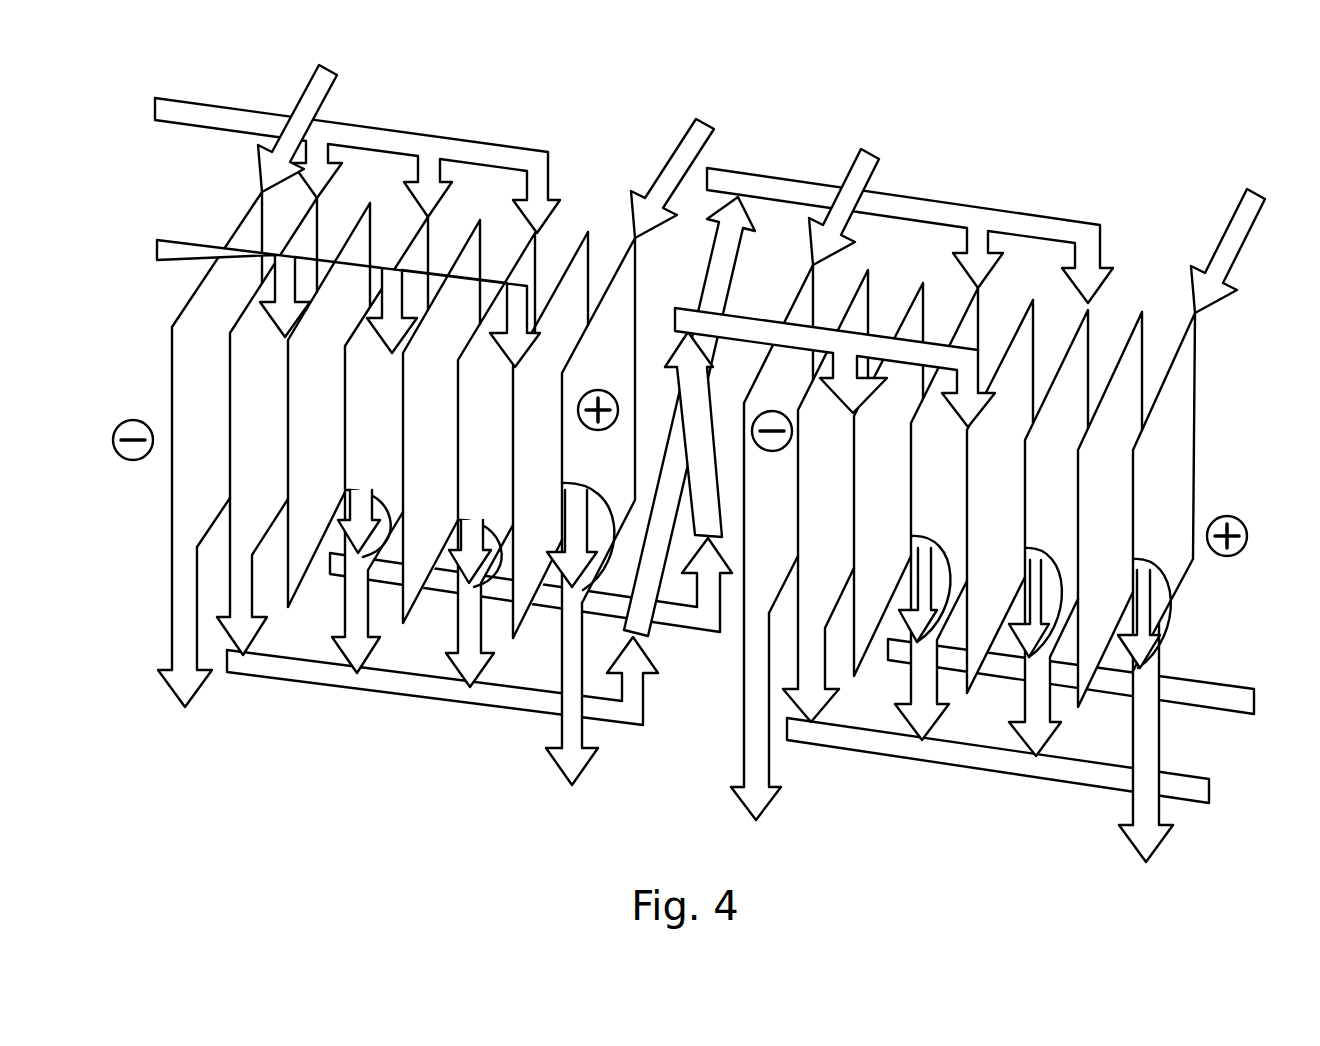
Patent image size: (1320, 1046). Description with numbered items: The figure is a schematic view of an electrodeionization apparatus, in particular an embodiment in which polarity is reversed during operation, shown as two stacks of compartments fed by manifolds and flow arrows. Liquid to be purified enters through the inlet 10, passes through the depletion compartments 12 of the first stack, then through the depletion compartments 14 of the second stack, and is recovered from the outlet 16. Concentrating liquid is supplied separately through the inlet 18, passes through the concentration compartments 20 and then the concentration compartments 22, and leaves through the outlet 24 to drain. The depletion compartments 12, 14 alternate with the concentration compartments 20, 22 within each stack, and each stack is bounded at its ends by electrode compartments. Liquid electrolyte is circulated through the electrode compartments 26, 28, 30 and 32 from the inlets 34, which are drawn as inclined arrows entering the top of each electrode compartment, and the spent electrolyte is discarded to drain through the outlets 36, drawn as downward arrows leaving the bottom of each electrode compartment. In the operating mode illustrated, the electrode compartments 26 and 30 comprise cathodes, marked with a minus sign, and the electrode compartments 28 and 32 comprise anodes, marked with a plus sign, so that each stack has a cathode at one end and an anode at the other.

The inlet 10 is at (325, 297).
The depletion compartments 12 is at (297, 446).
The depletion compartments 14 is at (864, 516).
The outlet 16 is at (1094, 679).
The inlet 18 is at (335, 157).
The concentration compartments 20 is at (242, 439).
The concentration compartments 22 is at (807, 509).
The outlet 24 is at (1023, 763).
The electrode compartment 26 is at (187, 429).
The electrode compartment 28 is at (580, 474).
The electrode compartment 30 is at (751, 506).
The electrode compartment 32 is at (1146, 546).
The inlets 34 is at (761, 176).
The outlets 36 is at (652, 704).